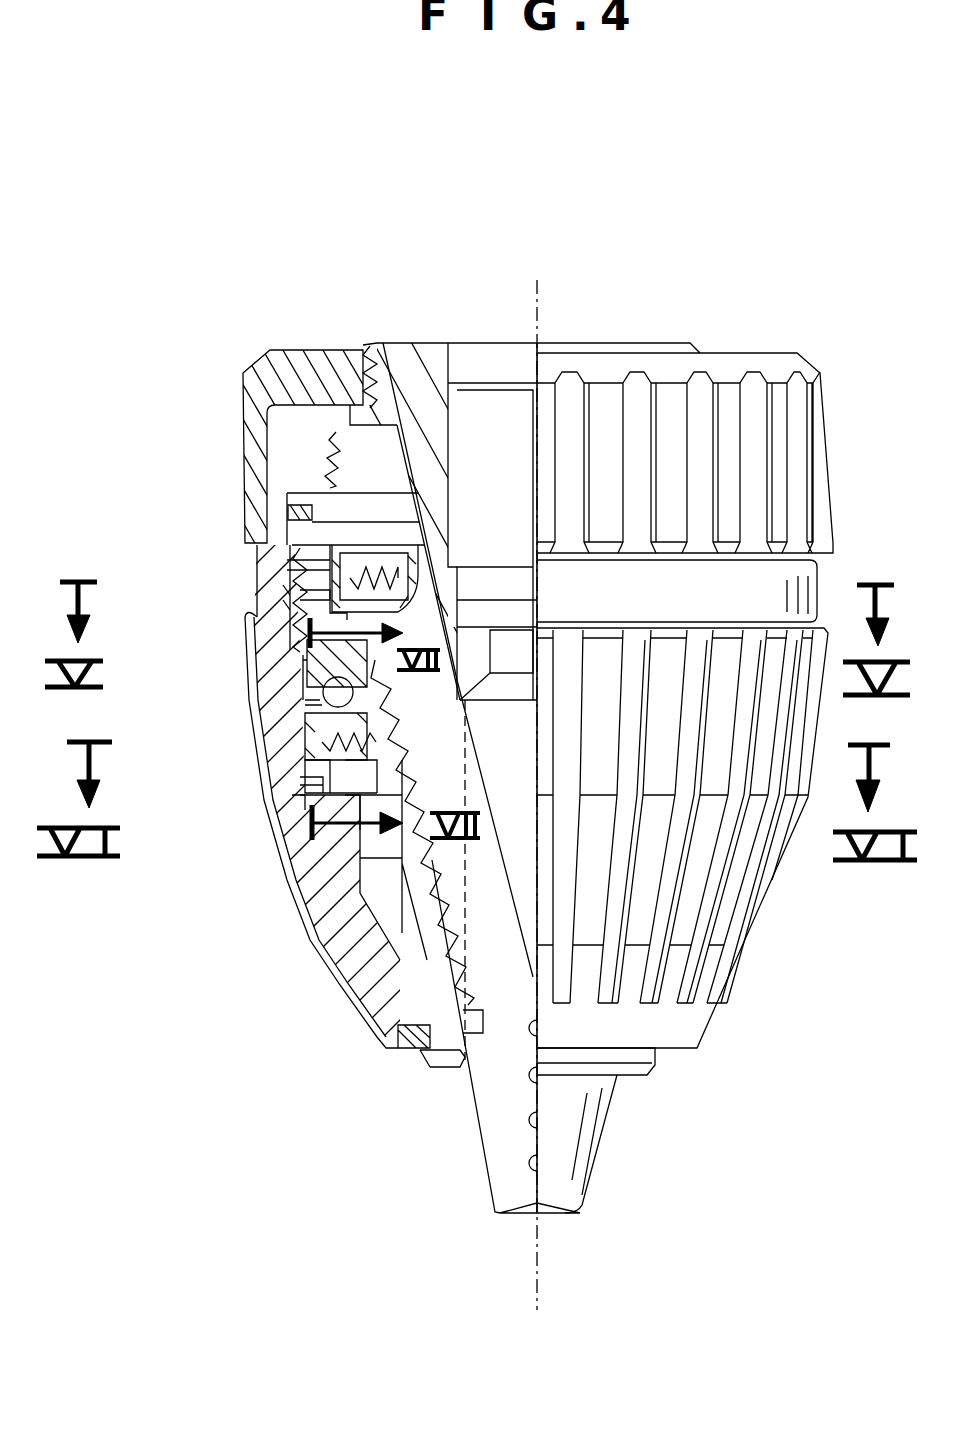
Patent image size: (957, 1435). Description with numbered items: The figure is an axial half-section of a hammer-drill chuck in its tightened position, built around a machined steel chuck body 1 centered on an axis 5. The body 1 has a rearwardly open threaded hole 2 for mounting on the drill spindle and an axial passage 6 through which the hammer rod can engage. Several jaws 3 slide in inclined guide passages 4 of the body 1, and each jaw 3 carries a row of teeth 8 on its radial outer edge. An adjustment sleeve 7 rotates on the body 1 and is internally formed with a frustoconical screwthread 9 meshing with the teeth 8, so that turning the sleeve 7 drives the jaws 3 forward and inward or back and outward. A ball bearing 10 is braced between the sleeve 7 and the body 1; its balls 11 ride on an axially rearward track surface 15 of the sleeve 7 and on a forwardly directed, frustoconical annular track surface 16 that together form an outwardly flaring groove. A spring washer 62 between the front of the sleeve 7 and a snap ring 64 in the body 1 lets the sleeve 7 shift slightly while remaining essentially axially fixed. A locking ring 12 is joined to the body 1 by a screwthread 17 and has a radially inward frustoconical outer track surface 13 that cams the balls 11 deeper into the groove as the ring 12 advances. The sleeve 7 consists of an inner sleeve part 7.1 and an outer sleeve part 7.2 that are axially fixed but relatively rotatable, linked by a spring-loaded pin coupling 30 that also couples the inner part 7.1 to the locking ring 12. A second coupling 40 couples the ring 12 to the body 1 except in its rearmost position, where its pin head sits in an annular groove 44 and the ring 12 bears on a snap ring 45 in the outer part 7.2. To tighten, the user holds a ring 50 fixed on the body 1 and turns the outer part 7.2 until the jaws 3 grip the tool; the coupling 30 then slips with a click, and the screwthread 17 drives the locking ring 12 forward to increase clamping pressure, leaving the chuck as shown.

The chuck body 1 is at (400, 358).
The threaded hole 2 is at (487, 420).
The jaws 3 is at (493, 1137).
The guide passages 4 is at (400, 968).
The axis 5 is at (537, 322).
The axial passage 6 is at (524, 665).
The adjustment sleeve 7 is at (296, 767).
The inner sleeve part 7.1 is at (340, 800).
The outer sleeve part 7.2 is at (292, 800).
The teeth 8 is at (440, 900).
The frustoconical screwthread 9 is at (403, 714).
The ball bearing 10 is at (322, 690).
The balls 11 is at (305, 703).
The locking ring 12 is at (280, 590).
The outer track surface 13 is at (300, 665).
The track surface 15 is at (328, 745).
The annular track surface 16 is at (300, 645).
The screwthread 17 is at (292, 565).
The coupling 30 is at (315, 808).
The coupling 40 is at (353, 548).
The annular groove 44 is at (300, 595).
The snap ring 45 is at (295, 510).
The ring 50 is at (300, 378).
The spring washer 62 is at (395, 1022).
The snap ring 64 is at (410, 1050).